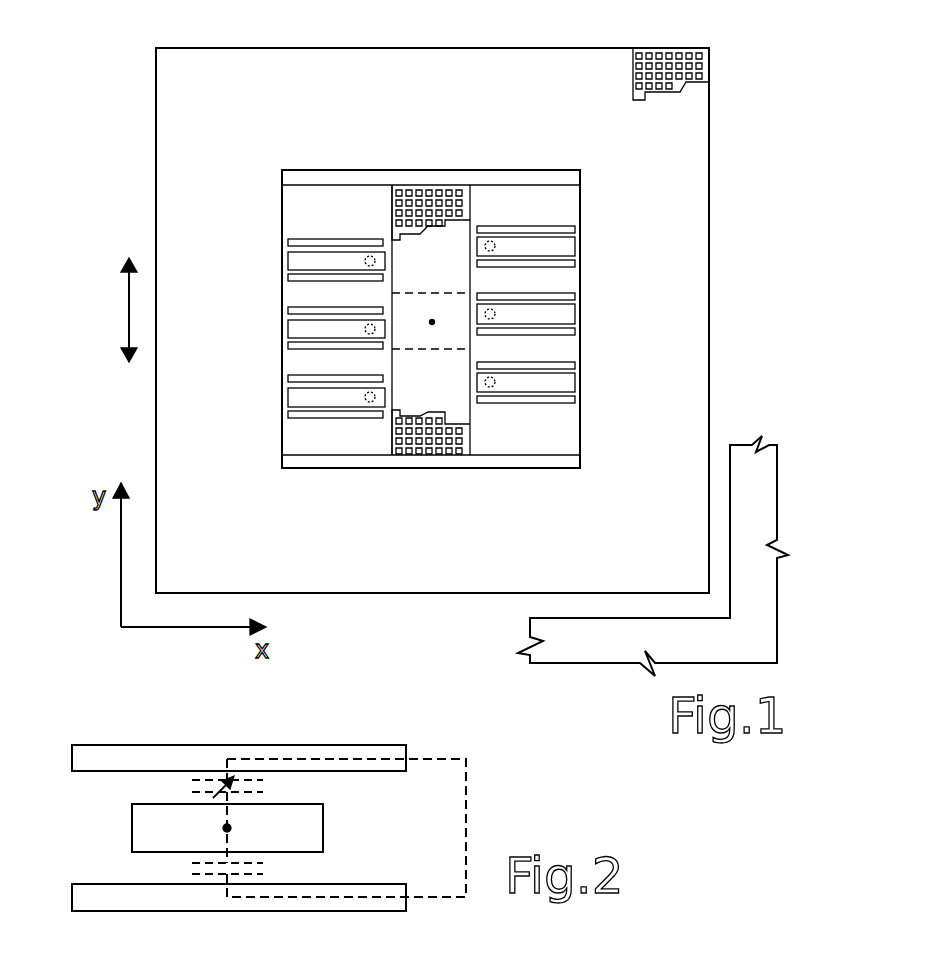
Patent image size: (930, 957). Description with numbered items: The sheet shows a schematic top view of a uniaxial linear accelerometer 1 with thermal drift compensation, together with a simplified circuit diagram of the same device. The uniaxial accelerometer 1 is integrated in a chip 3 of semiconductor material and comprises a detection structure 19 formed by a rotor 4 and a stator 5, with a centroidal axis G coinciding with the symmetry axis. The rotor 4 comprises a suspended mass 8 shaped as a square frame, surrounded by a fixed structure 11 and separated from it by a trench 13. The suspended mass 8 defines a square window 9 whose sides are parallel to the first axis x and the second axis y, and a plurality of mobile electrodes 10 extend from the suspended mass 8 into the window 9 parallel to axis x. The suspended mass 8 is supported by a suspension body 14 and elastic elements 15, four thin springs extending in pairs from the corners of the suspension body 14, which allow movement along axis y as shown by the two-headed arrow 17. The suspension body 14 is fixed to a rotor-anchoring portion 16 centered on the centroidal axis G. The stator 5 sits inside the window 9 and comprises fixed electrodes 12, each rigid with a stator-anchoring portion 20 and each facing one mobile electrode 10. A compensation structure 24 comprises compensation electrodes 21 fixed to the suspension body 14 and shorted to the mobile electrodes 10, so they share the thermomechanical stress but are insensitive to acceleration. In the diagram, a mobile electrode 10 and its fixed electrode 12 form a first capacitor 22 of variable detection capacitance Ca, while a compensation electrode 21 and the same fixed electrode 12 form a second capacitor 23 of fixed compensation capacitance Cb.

In FIG. 1, the uniaxial accelerometer 1 is at (132, 126).
In FIG. 1, the chip 3 is at (792, 627).
In FIG. 1, the rotor 4 is at (538, 46).
In FIG. 1, the stator 5 is at (294, 249).
In FIG. 1, the suspended mass 8 is at (345, 88).
In FIG. 1, the window 9 is at (333, 184).
In FIG. 1, the mobile electrodes 10 is at (300, 380).
In FIG. 2, the mobile electrodes 10 is at (127, 757).
In FIG. 1, the fixed structure 11 is at (597, 632).
In FIG. 1, the fixed electrodes 12 is at (572, 253).
In FIG. 2, the fixed electrodes 12 is at (145, 833).
In FIG. 1, the trench 13 is at (548, 604).
In FIG. 1, the suspension body 14 is at (410, 250).
In FIG. 1, the elastic elements 15 is at (537, 185).
In FIG. 1, the rotor-anchoring portion 16 is at (463, 339).
In FIG. 1, the two-headed arrow 17 is at (130, 322).
In FIG. 1, the detection structure 19 is at (714, 414).
In FIG. 1, the stator-anchoring portion 20 is at (490, 381).
In FIG. 1, the compensation electrodes 21 is at (318, 347).
In FIG. 2, the compensation electrodes 21 is at (148, 905).
In FIG. 2, the first capacitor 22 is at (263, 790).
In FIG. 2, the second capacitor 23 is at (263, 872).
In FIG. 1, the compensation structure 24 is at (300, 291).